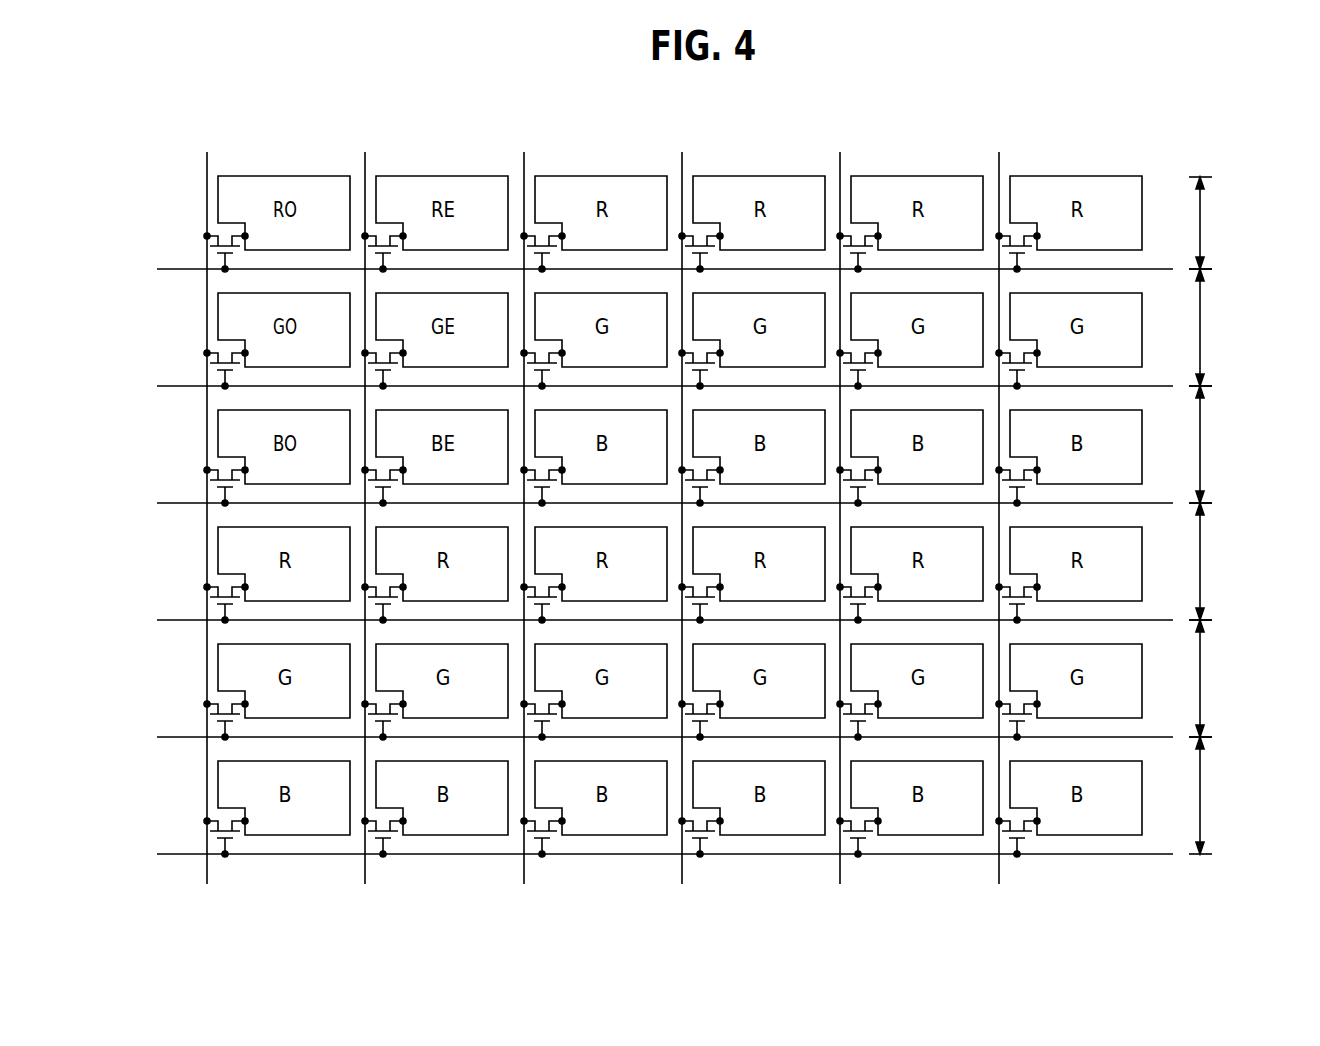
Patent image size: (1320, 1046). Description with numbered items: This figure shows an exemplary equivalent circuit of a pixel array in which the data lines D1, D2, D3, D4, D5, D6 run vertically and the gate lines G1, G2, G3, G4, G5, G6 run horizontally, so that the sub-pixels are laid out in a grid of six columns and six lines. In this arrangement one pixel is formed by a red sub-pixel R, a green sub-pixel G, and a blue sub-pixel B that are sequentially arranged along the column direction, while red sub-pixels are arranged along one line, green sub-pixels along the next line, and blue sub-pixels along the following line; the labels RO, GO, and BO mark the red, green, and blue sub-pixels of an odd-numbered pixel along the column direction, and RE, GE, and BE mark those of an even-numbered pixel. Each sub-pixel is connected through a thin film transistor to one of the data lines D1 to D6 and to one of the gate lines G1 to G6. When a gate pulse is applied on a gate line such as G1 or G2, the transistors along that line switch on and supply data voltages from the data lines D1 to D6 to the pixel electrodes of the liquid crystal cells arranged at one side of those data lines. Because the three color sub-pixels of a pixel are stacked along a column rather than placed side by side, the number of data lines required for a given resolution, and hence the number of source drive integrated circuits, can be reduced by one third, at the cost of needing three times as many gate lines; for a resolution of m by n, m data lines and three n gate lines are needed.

The data line D1 is at (207, 505).
The data line D2 is at (365, 505).
The data line D3 is at (524, 505).
The data line D4 is at (682, 505).
The data line D5 is at (840, 505).
The data line D6 is at (999, 505).
The gate line G1 is at (653, 269).
The gate line G2 is at (653, 386).
The gate line G3 is at (653, 503).
The gate line G4 is at (653, 620).
The gate line G5 is at (653, 737).
The gate line G6 is at (653, 854).